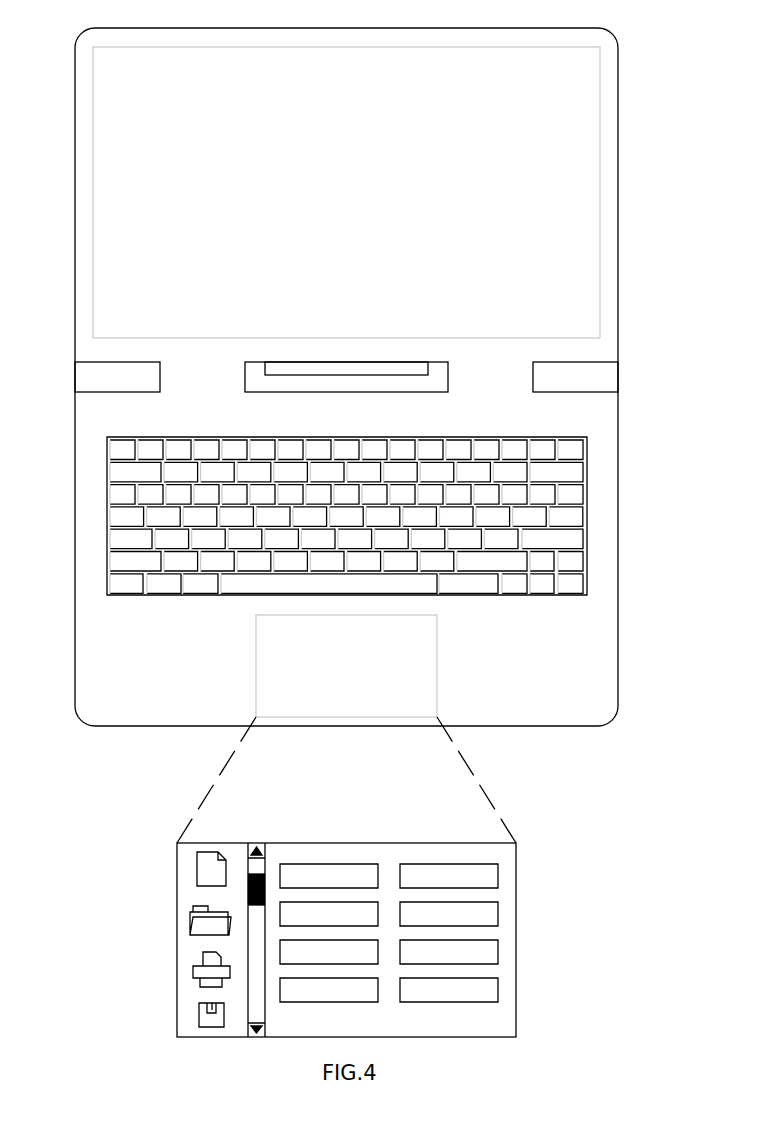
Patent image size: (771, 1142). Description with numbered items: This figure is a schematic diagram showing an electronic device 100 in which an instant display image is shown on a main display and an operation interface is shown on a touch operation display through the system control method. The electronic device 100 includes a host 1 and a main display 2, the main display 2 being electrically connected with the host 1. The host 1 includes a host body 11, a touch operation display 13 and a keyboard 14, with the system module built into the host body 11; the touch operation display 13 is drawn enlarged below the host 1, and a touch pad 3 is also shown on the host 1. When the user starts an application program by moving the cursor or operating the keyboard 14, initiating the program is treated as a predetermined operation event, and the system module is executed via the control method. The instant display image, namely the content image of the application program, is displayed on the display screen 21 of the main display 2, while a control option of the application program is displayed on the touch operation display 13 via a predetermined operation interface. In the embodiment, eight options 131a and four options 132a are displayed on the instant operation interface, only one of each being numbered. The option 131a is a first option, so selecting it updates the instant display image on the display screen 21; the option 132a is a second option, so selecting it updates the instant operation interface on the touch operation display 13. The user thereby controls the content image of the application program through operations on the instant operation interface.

The electronic device 100 is at (645, 91).
The host 1 is at (618, 444).
The host body 11 is at (607, 517).
The keyboard 14 is at (100, 474).
The touch pad 3 is at (446, 653).
The main display 2 is at (75, 133).
The display screen 21 is at (88, 208).
The touch operation display 13 is at (177, 898).
The option 131a is at (505, 874).
The option 132a is at (195, 968).